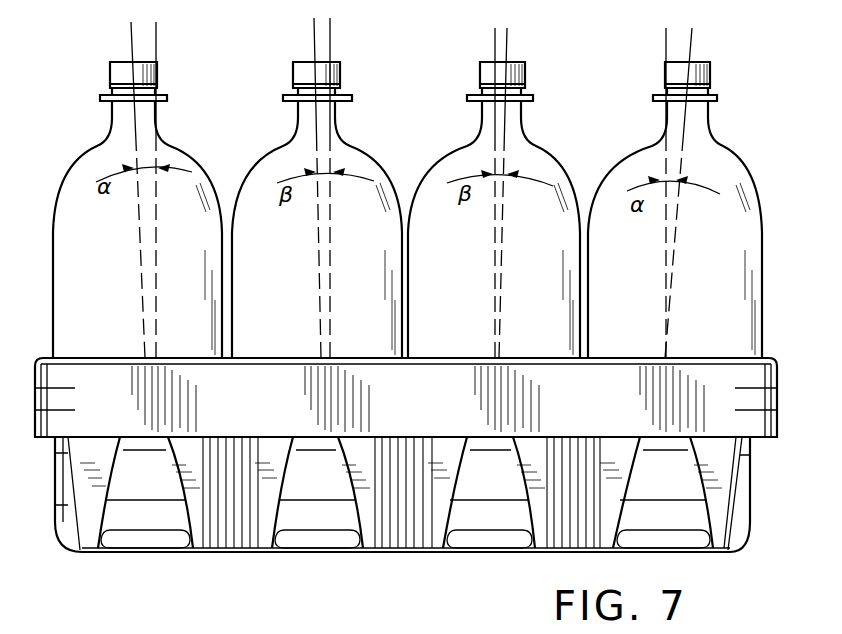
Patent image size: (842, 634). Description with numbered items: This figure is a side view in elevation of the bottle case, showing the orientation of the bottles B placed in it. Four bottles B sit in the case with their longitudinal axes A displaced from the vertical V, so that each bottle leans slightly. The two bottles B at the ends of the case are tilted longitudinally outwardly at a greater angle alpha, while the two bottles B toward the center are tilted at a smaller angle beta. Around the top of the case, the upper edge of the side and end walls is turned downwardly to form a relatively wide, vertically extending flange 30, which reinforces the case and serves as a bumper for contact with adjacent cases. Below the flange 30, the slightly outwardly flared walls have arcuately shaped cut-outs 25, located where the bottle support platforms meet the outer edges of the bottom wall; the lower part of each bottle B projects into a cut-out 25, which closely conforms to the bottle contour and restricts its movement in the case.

The cut-outs 25 is at (105, 515).
The flange 30 is at (762, 428).
The bottles B is at (80, 158).
The longitudinal axes A is at (407, 185).
The vertical V is at (411, 185).